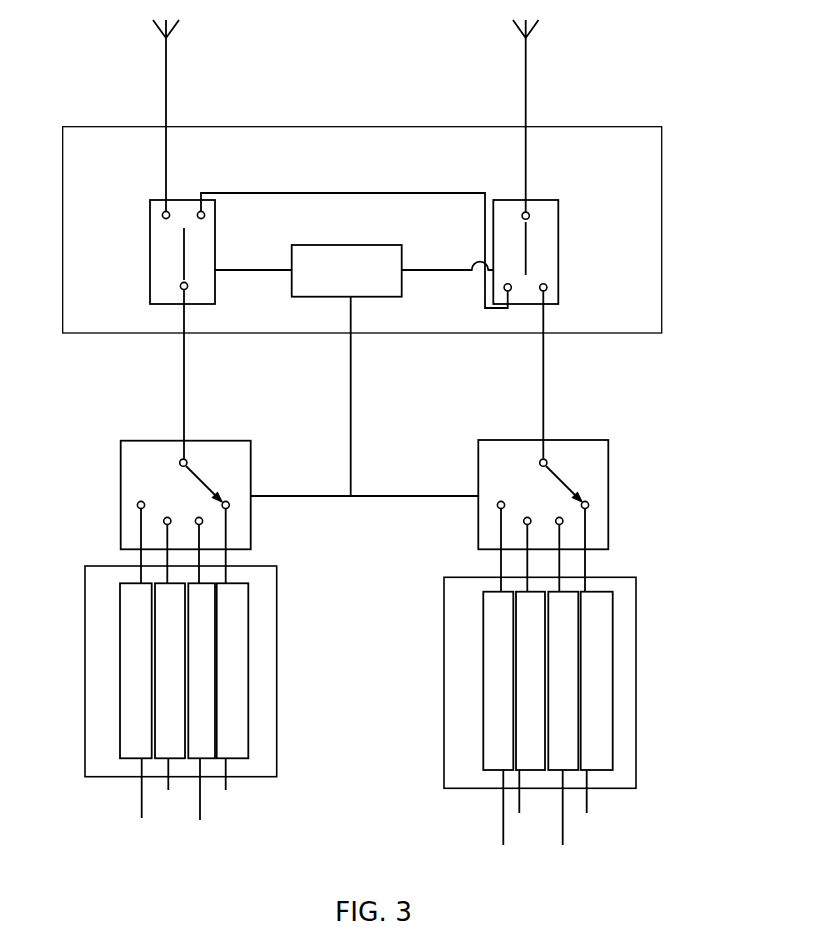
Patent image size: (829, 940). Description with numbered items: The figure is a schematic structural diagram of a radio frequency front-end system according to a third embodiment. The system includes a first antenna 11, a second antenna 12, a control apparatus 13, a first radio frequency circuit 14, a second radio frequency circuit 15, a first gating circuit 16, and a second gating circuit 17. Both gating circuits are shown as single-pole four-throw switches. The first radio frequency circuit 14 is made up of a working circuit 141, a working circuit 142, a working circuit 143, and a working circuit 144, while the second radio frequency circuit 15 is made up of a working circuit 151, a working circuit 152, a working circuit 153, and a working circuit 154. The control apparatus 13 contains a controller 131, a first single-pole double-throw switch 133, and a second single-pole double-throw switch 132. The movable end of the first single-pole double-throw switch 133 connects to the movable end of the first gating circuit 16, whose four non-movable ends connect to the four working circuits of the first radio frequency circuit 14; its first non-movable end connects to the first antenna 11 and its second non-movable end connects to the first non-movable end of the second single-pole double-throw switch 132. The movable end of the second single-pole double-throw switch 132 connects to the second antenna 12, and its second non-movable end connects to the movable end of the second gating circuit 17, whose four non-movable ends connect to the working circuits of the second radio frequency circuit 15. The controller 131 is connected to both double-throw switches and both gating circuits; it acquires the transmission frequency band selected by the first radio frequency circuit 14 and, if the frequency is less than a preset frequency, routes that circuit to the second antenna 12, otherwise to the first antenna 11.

The first antenna 11 is at (167, 67).
The second antenna 12 is at (527, 72).
The control apparatus 13 is at (663, 230).
The controller 131 is at (347, 244).
The second single-pole double-throw switch 132 is at (559, 253).
The first single-pole double-throw switch 133 is at (150, 258).
The first radio frequency circuit 14 is at (84, 668).
The working circuit 141 is at (144, 707).
The working circuit 142 is at (176, 693).
The working circuit 143 is at (214, 707).
The working circuit 144 is at (240, 693).
The second radio frequency circuit 15 is at (637, 682).
The working circuit 151 is at (511, 724).
The working circuit 152 is at (535, 710).
The working circuit 153 is at (574, 724).
The working circuit 154 is at (602, 710).
The first gating circuit 16 is at (121, 495).
The second gating circuit 17 is at (609, 493).